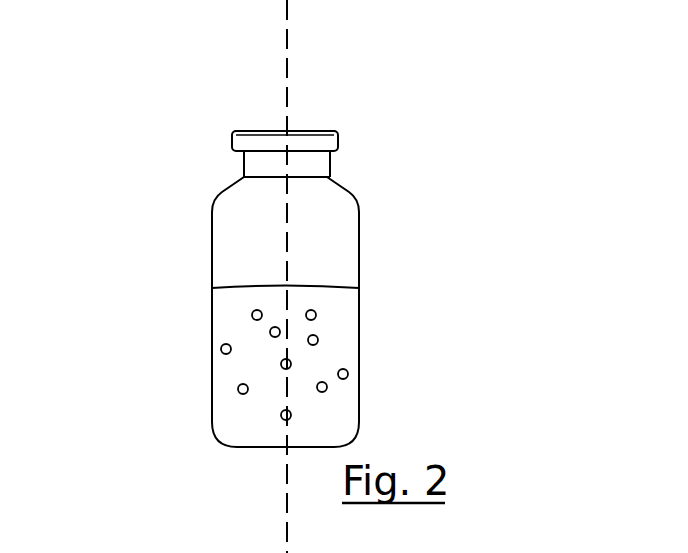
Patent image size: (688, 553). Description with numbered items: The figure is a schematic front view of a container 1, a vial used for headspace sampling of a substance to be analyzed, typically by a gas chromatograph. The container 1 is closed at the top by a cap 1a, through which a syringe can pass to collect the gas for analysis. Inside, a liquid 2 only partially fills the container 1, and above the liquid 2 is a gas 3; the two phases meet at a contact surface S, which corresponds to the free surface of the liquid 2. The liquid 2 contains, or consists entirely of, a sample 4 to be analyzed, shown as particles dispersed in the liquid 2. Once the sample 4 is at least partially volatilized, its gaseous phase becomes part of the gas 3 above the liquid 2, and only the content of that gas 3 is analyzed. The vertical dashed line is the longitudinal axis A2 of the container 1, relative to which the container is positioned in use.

The longitudinal axis A2 is at (287, 40).
The container 1 is at (396, 182).
The cap 1a is at (308, 128).
The gas 3 is at (243, 245).
The contact surface S is at (318, 287).
The liquid 2 is at (347, 327).
The sample 4 is at (221, 349).